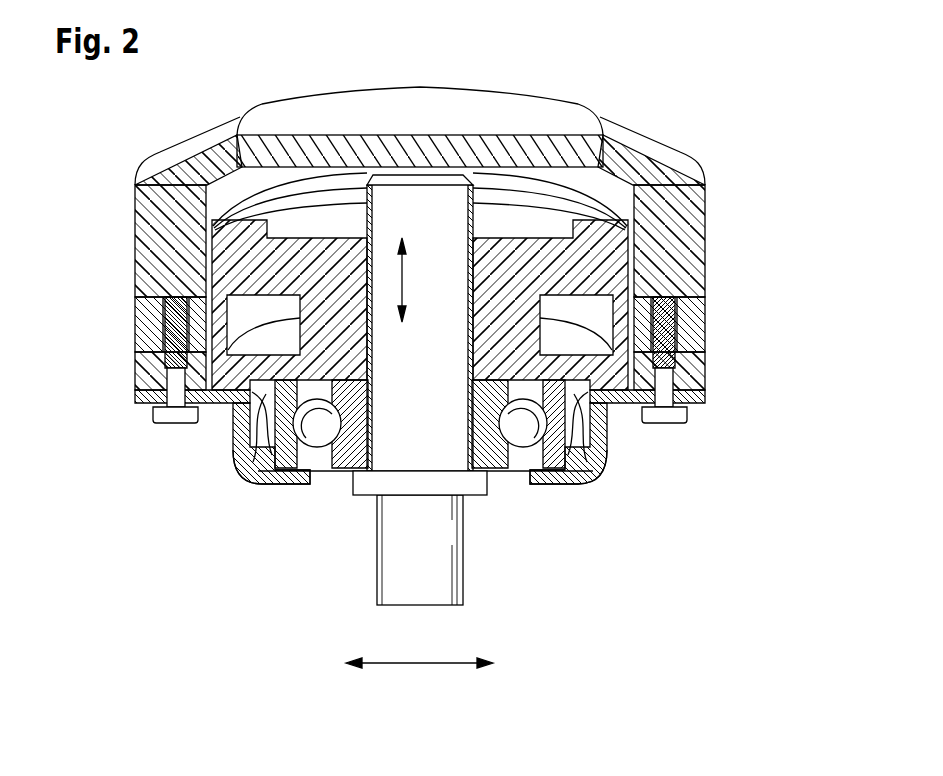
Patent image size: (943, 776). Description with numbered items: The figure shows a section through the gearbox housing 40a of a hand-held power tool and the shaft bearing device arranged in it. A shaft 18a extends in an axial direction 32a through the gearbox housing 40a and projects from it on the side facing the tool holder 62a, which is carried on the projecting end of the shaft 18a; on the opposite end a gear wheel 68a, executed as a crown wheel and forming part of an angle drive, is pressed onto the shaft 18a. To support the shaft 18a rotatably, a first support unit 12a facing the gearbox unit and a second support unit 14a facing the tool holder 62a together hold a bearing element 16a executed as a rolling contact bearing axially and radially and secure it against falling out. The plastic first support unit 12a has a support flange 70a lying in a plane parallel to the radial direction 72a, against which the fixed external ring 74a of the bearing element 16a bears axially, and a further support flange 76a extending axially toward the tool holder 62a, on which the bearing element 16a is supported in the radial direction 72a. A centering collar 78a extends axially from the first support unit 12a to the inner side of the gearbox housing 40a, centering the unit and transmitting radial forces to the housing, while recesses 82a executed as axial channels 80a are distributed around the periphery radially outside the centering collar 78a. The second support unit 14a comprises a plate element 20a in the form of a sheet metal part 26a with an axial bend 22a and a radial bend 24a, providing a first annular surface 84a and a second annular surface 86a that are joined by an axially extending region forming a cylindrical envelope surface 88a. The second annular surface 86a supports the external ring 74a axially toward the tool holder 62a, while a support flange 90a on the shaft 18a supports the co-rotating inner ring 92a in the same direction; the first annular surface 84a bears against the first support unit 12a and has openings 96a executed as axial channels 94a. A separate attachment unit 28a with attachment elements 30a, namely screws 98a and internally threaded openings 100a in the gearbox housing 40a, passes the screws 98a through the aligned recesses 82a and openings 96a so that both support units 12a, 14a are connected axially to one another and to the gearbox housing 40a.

The first support unit 12a is at (705, 362).
The second support unit 14a is at (703, 408).
The bearing element 16a is at (575, 487).
The shaft 18a is at (437, 580).
The plate element 20a is at (607, 450).
The axial bend 22a is at (235, 462).
The radial bend 24a is at (593, 480).
The sheet metal part 26a is at (272, 487).
The attachment unit 28a is at (158, 361).
The attachment elements 30a is at (665, 300).
The axial direction 32a is at (404, 286).
The gearbox housing 40a is at (508, 112).
The tool holder 62a is at (341, 595).
The gear wheel 68a is at (598, 238).
The support flange 70a is at (605, 303).
The radial direction 72a is at (420, 663).
The external ring 74a is at (283, 480).
The support flange 76a is at (607, 432).
The centering collar 78a is at (160, 298).
The axial channels 80a is at (705, 377).
The recesses 82a is at (705, 392).
The first annular surface 84a is at (255, 425).
The second annular surface 86a is at (283, 480).
The cylindrical envelope surface 88a is at (258, 480).
The support flange 90a is at (484, 484).
The inner ring 92a is at (340, 478).
The axial channels 94a is at (137, 407).
The openings 96a is at (148, 410).
The screws 98a is at (160, 337).
The openings 100a is at (157, 302).